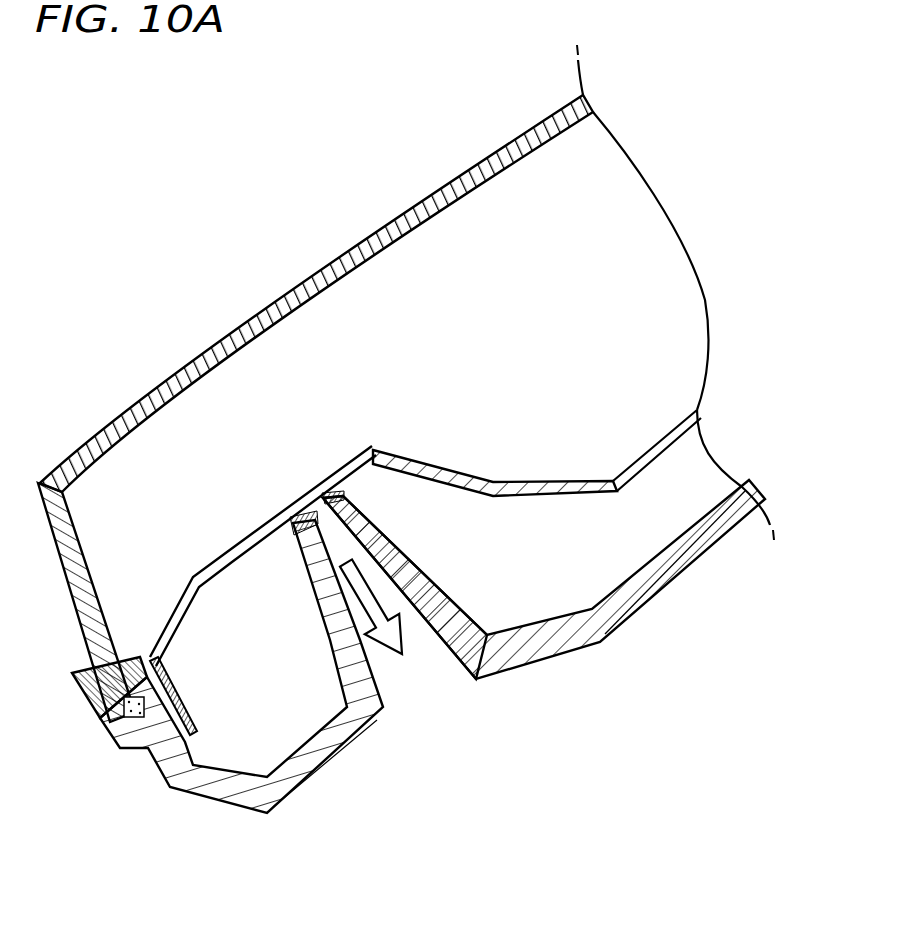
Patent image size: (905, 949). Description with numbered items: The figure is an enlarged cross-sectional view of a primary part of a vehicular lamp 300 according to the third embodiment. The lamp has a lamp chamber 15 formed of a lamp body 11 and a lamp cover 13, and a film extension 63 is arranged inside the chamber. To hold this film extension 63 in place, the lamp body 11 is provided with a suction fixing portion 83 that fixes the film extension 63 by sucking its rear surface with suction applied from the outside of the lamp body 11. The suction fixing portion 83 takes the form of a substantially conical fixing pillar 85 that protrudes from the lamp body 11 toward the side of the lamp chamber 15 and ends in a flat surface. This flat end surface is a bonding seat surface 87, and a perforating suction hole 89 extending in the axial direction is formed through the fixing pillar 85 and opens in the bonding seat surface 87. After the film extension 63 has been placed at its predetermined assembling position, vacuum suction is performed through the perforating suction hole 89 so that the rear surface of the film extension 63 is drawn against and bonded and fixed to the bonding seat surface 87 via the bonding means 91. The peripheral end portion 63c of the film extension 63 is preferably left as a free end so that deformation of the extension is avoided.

The vehicular lamp 300 is at (236, 243).
The lamp cover 13 is at (383, 213).
The lamp chamber 15 is at (520, 258).
The lamp body 11 is at (733, 553).
The film extension 63 is at (569, 458).
The peripheral end portion 63c is at (183, 708).
The suction fixing portion 83 is at (342, 455).
The fixing pillar 85 is at (462, 733).
The bonding seat surface 87 is at (345, 492).
The perforating suction hole 89 is at (416, 658).
The bonding means 91 is at (286, 534).